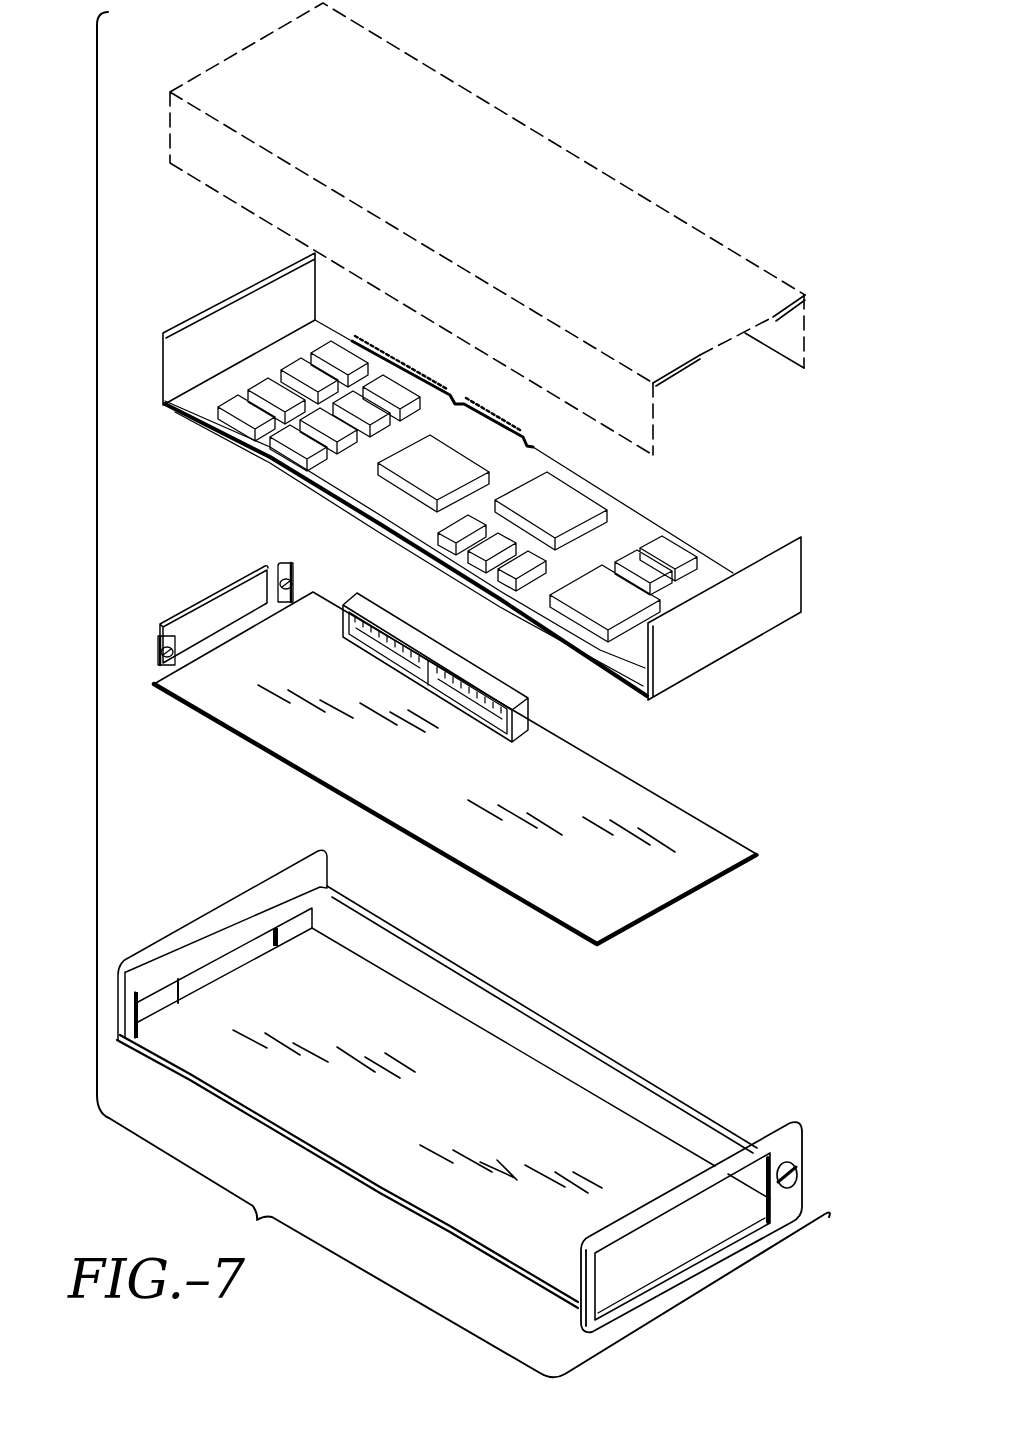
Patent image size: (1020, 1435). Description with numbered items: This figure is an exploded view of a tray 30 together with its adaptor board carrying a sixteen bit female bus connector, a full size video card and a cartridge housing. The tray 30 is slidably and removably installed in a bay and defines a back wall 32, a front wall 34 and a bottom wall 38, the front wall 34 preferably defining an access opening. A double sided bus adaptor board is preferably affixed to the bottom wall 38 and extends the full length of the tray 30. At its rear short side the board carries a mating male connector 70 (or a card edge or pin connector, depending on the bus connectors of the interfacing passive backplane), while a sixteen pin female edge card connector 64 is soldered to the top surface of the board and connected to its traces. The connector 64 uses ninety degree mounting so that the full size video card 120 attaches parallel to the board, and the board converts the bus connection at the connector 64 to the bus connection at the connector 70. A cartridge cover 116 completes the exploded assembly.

The tray 30 is at (355, 1271).
The back wall 32 is at (233, 918).
The front wall 34 is at (788, 1207).
The bottom wall 38 is at (188, 1052).
The female edge card connector 64 is at (530, 714).
The mating male connector 70 is at (233, 592).
The cartridge cover 116 is at (498, 148).
The full size video card 120 is at (615, 528).